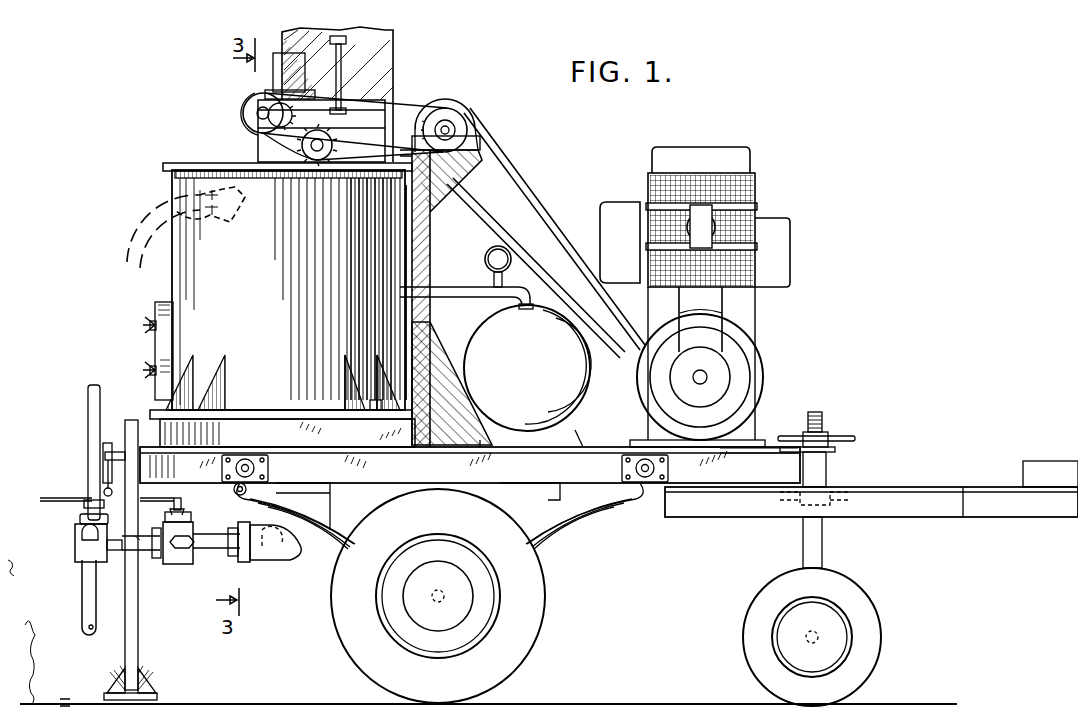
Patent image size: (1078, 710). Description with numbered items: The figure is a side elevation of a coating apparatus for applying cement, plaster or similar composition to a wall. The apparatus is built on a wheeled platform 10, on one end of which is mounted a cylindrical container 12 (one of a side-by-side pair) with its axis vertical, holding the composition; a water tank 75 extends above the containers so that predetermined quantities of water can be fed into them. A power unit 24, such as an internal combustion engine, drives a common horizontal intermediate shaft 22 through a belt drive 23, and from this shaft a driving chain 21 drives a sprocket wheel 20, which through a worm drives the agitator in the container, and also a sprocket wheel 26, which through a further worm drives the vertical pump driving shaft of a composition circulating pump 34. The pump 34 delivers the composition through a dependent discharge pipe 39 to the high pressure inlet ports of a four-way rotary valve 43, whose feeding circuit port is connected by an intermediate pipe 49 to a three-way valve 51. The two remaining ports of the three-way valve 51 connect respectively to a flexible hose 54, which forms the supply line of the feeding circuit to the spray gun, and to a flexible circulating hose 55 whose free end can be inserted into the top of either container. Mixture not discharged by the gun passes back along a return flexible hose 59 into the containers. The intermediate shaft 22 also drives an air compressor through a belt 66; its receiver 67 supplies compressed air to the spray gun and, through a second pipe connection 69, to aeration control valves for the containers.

The wheeled platform 10 is at (540, 452).
The container 12 is at (210, 280).
The sprocket wheel 20 is at (300, 145).
The driving chain 21 is at (372, 97).
The intermediate shaft 22 is at (445, 128).
The belt drive 23 is at (548, 262).
The power unit 24 is at (748, 338).
The sprocket wheel 26 is at (246, 112).
The composition circulating pump 34 is at (267, 548).
The discharge pipe 39 is at (210, 550).
The 4-way rotary valve 43 is at (190, 509).
The intermediate pipe 49 is at (148, 552).
The 3-way valve 51 is at (78, 538).
The flexible hose 54 is at (88, 415).
The flexible circulating hose 55 is at (84, 600).
The return flexible hose 59 is at (147, 222).
The belt 66 is at (502, 232).
The receiver 67 is at (527, 376).
The pipe connection 69 is at (437, 290).
The water tank 75 is at (385, 45).